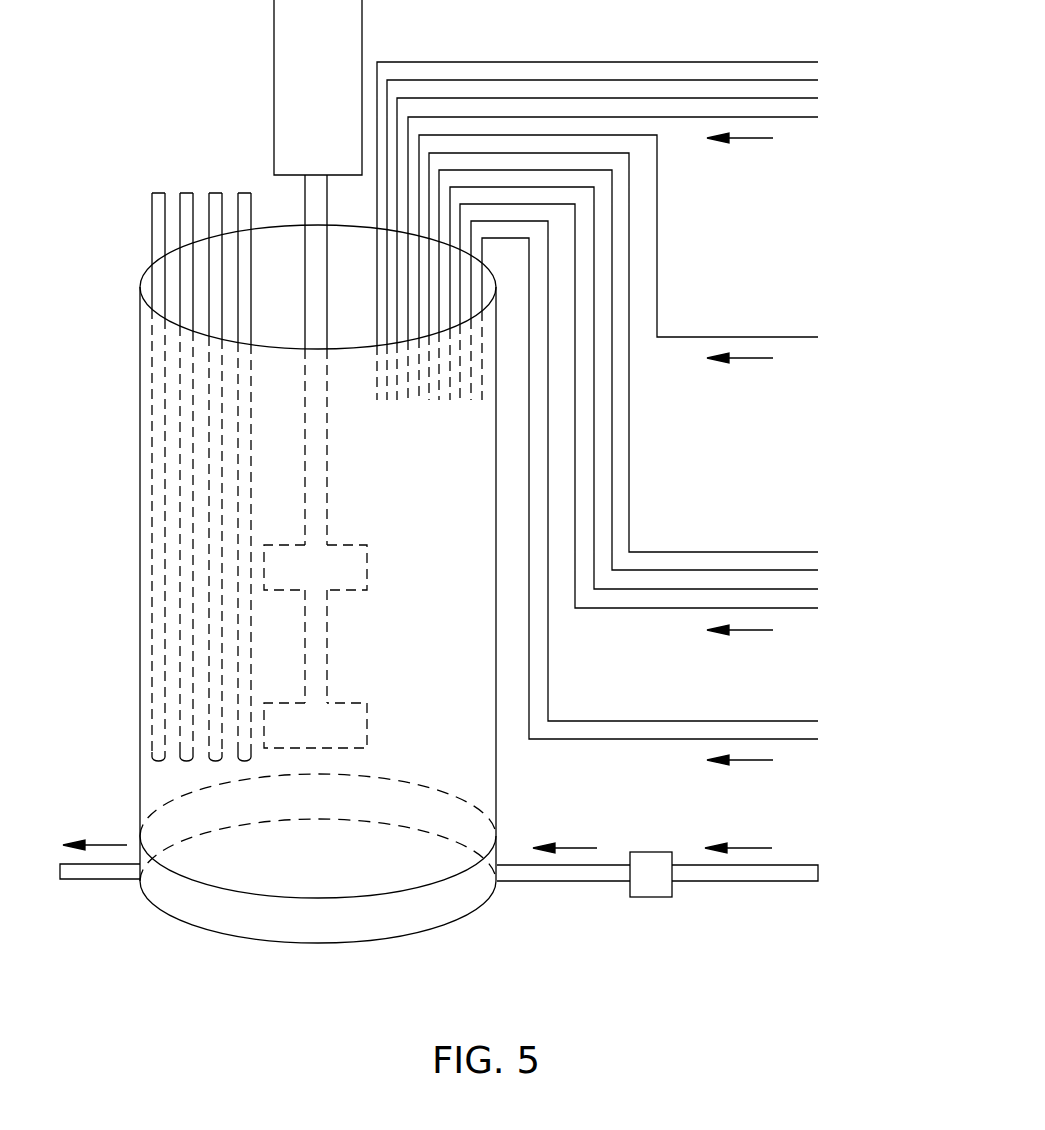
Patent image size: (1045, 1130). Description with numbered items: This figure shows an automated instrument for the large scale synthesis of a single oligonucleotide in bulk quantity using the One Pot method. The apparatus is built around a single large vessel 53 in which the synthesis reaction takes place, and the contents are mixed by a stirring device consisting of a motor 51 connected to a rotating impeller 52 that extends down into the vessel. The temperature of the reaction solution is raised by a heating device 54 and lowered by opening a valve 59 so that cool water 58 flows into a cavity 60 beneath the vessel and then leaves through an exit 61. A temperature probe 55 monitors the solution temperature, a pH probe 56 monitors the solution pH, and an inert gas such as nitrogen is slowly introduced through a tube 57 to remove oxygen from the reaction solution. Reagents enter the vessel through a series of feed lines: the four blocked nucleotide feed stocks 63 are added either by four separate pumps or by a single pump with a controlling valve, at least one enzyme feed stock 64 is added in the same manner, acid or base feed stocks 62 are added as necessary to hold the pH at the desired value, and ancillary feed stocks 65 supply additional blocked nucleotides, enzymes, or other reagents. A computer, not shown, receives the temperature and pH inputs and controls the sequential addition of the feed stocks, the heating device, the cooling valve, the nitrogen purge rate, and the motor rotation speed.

The motor 51 is at (331, 110).
The rotating impeller 52 is at (357, 572).
The vessel 53 is at (140, 450).
The heating device 54 is at (153, 198).
The temperature probe 55 is at (187, 193).
The pH probe 56 is at (217, 193).
The tube 57 is at (247, 193).
The cool water 58 is at (820, 875).
The valve 59 is at (653, 898).
The cavity 60 is at (240, 923).
The exit 61 is at (97, 883).
The acid or base feed stocks 62 is at (798, 720).
The blocked nucleotide feed stocks 63 is at (798, 552).
The enzyme feed stock 64 is at (802, 336).
The ancillary feed stocks 65 is at (805, 65).